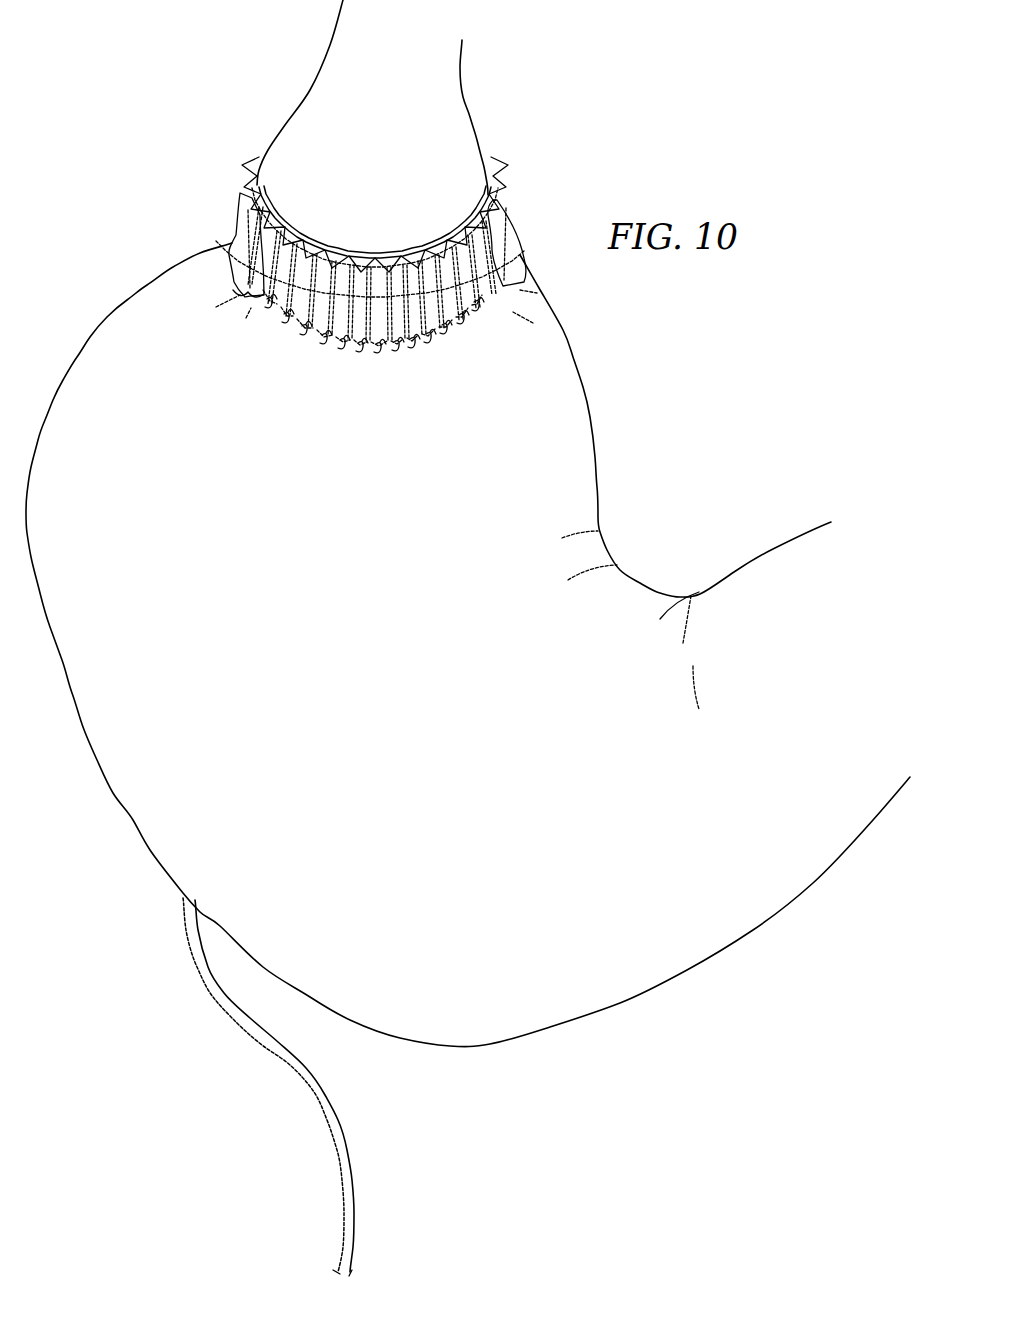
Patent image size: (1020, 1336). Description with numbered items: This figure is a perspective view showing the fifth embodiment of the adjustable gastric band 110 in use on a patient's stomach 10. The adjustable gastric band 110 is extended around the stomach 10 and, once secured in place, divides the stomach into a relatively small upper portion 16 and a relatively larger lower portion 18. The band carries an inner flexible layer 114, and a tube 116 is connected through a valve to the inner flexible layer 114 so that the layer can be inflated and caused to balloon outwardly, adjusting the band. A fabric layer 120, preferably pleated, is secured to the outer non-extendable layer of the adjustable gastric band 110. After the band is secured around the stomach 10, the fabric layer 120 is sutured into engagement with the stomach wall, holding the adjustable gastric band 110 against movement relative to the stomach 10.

The stomach 10 is at (545, 1002).
The upper portion 16 is at (278, 127).
The lower portion 18 is at (364, 657).
The adjustable gastric band 110 is at (514, 203).
The inner flexible layer 114 is at (288, 314).
The tube 116 is at (327, 1132).
The fabric layer 120 is at (238, 222).